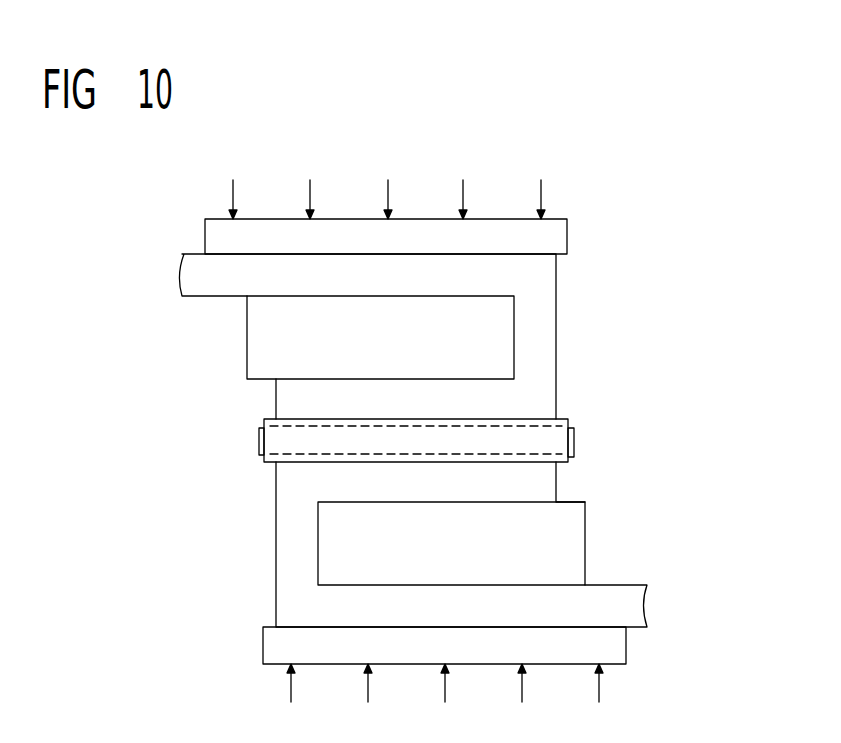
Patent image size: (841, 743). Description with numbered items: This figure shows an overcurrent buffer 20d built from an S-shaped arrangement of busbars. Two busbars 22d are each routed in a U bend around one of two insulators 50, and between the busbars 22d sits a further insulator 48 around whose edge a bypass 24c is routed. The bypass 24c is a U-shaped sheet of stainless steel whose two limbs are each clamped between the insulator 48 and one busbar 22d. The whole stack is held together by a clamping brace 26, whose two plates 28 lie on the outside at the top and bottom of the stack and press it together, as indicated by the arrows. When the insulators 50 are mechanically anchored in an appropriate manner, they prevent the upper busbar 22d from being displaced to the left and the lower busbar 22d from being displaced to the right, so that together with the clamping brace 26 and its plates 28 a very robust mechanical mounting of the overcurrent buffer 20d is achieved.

The overcurrent buffer 20d is at (128, 373).
The clamping brace 26 is at (606, 373).
The plates 28 is at (555, 246).
The busbars 22d is at (542, 404).
The insulators 50 is at (259, 366).
The insulator 48 is at (258, 440).
The bypass 24c is at (552, 440).